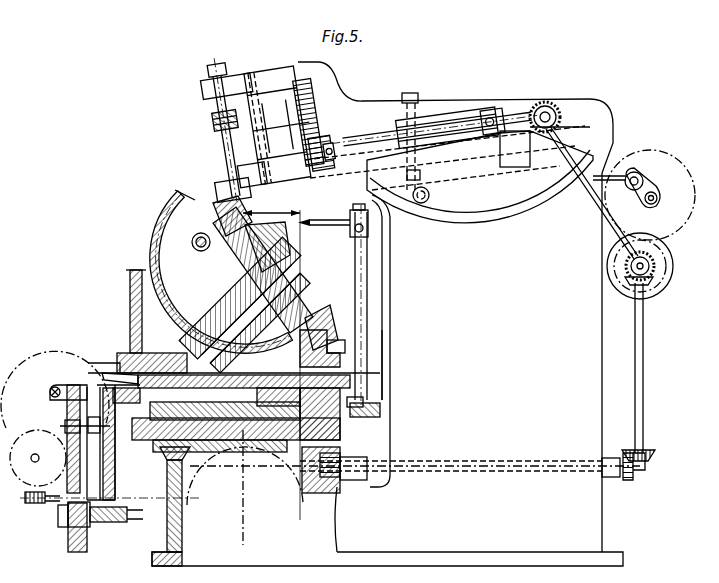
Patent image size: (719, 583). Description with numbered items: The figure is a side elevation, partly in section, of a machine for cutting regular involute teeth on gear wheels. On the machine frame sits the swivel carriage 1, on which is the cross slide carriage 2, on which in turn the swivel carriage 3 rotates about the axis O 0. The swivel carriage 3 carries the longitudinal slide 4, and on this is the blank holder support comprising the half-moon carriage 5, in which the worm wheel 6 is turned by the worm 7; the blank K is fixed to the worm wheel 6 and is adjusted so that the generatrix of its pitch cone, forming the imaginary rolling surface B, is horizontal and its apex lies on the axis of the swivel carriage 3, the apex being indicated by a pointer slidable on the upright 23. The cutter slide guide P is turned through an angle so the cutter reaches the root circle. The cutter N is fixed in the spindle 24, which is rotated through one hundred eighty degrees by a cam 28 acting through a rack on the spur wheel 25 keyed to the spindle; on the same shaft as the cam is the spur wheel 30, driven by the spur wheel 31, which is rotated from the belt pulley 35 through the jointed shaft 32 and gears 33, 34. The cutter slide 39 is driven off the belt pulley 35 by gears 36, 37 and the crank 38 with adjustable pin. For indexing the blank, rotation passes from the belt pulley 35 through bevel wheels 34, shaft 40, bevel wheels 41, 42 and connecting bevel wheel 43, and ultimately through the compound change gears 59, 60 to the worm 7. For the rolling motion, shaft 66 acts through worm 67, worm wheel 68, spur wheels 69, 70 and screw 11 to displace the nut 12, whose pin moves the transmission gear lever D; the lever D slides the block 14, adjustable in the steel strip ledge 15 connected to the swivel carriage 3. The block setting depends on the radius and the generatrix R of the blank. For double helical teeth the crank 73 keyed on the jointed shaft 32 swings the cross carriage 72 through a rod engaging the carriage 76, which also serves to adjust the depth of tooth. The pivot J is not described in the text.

The swivel carriage 1 is at (343, 432).
The cross slide carriage 2 is at (380, 410).
The swivel carriage 3 is at (355, 387).
The longitudinal slide 4 is at (340, 370).
The half-moon carriage 5 is at (330, 324).
The worm wheel 6 is at (300, 297).
The worm 7 is at (178, 246).
The screw 11 is at (50, 391).
The nut 12 is at (58, 386).
The block 14 is at (67, 414).
The steel strip ledge 15 is at (100, 473).
The upright 23 is at (368, 249).
The spindle 24 is at (222, 175).
The spur wheel 25 is at (205, 121).
The cam 28 is at (241, 78).
The spur wheel 30 is at (309, 93).
The spur wheel 31 is at (325, 147).
The jointed shaft 32 is at (377, 137).
The gear 33 is at (550, 102).
The gear 34 is at (655, 263).
The belt pulley 35 is at (673, 287).
The gear 36 is at (662, 247).
The gear 37 is at (637, 157).
The crank 38 is at (650, 183).
The cutter slide 39 is at (431, 117).
The shaft 40 is at (643, 345).
The bevel wheel 41 is at (640, 471).
The bevel wheel 42 is at (337, 480).
The connecting bevel wheel 43 is at (340, 447).
The compound gear 59 is at (240, 500).
The compound gear 60 is at (330, 353).
The shaft 66 is at (56, 510).
The worm 67 is at (38, 503).
The worm wheel 68 is at (28, 503).
The spur wheel 69 is at (38, 458).
The spur wheel 70 is at (50, 351).
The cross carriage 72 is at (258, 78).
The crank 73 is at (222, 150).
The carriage 76 is at (279, 78).
The rolling surface B is at (224, 226).
The transmission gear lever D is at (98, 481).
The rod J is at (324, 211).
The blank K is at (300, 278).
The cutter N is at (241, 216).
The axis of rotation O is at (315, 207).
The axis of rotation 0 is at (303, 528).
The cutter slide guide P is at (477, 200).
The generatrix R is at (271, 205).